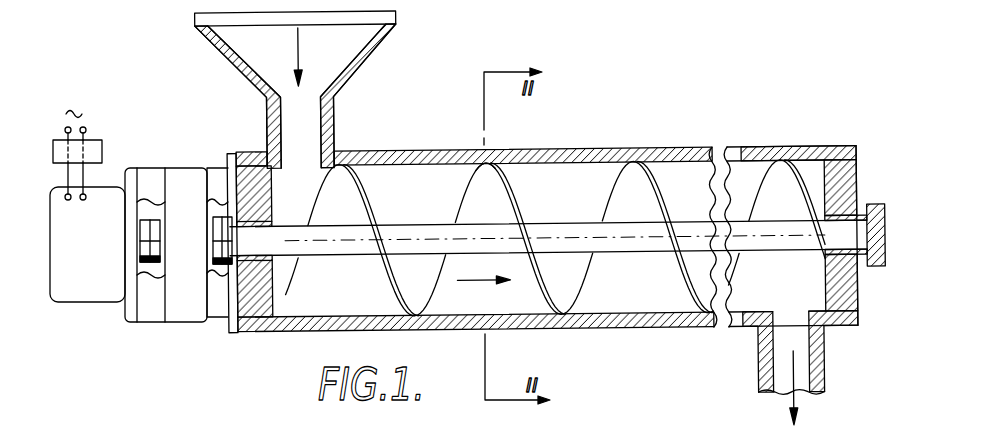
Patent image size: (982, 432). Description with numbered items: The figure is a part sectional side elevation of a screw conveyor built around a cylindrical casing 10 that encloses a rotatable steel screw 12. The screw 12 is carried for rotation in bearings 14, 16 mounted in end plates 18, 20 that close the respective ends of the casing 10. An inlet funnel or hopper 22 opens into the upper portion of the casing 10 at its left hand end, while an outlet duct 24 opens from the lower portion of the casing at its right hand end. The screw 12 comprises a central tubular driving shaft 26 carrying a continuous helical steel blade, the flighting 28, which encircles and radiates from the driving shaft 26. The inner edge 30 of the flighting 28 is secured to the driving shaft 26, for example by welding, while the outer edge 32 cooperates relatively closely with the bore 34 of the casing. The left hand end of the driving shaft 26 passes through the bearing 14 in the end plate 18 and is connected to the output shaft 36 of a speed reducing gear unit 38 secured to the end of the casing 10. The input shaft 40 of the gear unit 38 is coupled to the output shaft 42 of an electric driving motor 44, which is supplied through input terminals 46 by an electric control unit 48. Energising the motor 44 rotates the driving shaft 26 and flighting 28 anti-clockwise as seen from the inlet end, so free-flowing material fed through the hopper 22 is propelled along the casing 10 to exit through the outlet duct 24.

The cylindrical casing 10 is at (603, 148).
The screw 12 is at (548, 238).
The bearing 14 is at (270, 214).
The bearing 16 is at (848, 195).
The end plate 18 is at (240, 333).
The end plate 20 is at (852, 144).
The inlet funnel/hopper 22 is at (372, 58).
The outlet duct 24 is at (757, 368).
The driving shaft 26 is at (322, 250).
The flighting 28 is at (388, 290).
The inner edge 30 is at (506, 226).
The outer edge 32 is at (484, 170).
The bore 34 is at (556, 198).
The output shaft 36 is at (207, 273).
The speed reducing gear unit 38 is at (187, 307).
The input shaft 40 is at (162, 216).
The output shaft 42 is at (135, 270).
The electric driving motor 44 is at (95, 303).
The input terminals 46 is at (85, 200).
The electric control unit 48 is at (103, 149).